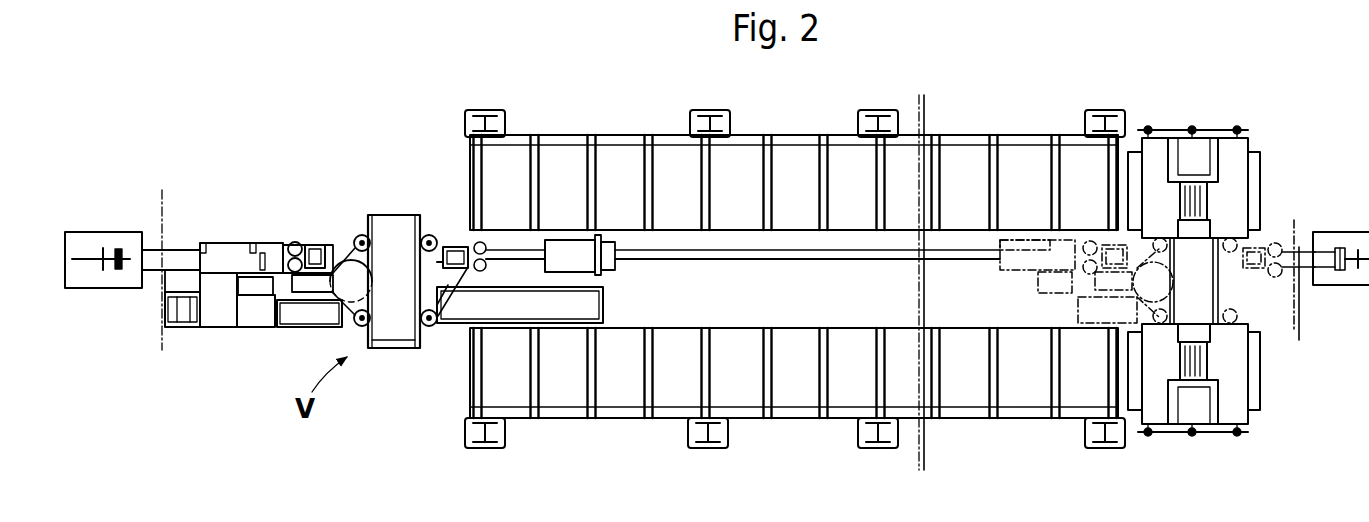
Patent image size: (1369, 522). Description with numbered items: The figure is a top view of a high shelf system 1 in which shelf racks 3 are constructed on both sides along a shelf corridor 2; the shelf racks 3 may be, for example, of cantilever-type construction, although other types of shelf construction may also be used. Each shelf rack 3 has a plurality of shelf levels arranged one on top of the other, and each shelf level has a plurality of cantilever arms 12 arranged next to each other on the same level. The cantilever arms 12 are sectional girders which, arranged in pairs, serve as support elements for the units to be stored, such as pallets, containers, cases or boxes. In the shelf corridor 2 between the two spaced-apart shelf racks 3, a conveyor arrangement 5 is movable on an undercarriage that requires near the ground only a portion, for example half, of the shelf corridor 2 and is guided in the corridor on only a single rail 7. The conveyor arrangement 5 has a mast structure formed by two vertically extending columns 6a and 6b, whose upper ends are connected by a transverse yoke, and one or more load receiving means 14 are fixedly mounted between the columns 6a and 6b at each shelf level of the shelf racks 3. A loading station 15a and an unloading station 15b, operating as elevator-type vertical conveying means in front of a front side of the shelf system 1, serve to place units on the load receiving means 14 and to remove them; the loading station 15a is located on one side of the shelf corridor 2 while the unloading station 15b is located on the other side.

The high shelf system 1 is at (748, 279).
The shelf corridor 2 is at (735, 231).
The shelf racks 3 is at (685, 327).
The conveyor arrangement 5 is at (358, 215).
The column 6a is at (313, 243).
The column 6b is at (449, 247).
The rail 7 is at (847, 257).
The cantilever arms 12 is at (640, 176).
The load receiving means 14 is at (405, 338).
The loading station 15a is at (1265, 188).
The unloading station 15b is at (1265, 370).